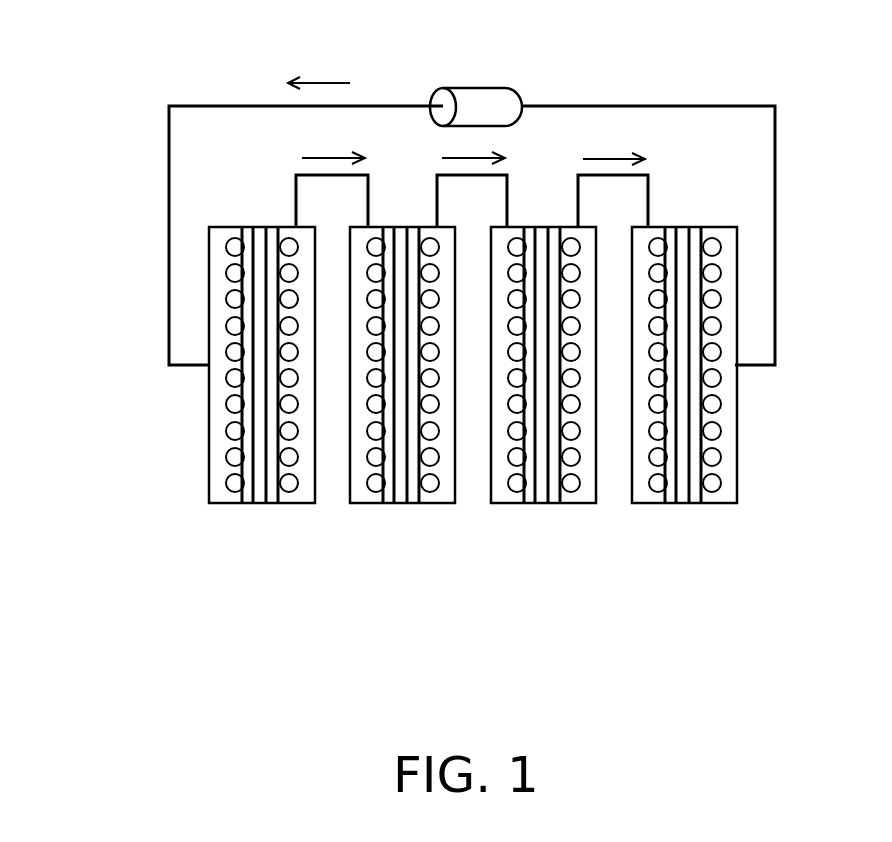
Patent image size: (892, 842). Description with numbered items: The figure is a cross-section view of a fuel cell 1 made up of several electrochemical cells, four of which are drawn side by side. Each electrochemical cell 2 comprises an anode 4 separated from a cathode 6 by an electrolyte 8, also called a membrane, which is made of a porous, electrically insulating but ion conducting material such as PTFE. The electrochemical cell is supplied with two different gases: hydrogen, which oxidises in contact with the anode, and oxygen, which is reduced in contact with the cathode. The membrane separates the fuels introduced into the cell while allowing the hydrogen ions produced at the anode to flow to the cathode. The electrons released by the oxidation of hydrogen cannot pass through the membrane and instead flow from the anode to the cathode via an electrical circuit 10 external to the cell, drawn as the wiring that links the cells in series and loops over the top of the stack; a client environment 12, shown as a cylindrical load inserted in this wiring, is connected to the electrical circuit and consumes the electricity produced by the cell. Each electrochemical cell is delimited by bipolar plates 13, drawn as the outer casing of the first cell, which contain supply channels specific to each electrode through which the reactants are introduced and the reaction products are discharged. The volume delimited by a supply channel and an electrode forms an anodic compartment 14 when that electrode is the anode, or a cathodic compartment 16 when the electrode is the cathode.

The fuel cell 1 is at (697, 675).
The electrochemical cell 2 is at (252, 448).
The anode 4 is at (247, 498).
The cathode 6 is at (291, 402).
The electrolyte 8 is at (260, 505).
The electrical circuit 10 is at (213, 412).
The client environment 12 is at (482, 100).
The bipolar plates 13 is at (221, 495).
The anodic compartment 14 is at (541, 507).
The cathodic compartment 16 is at (681, 507).